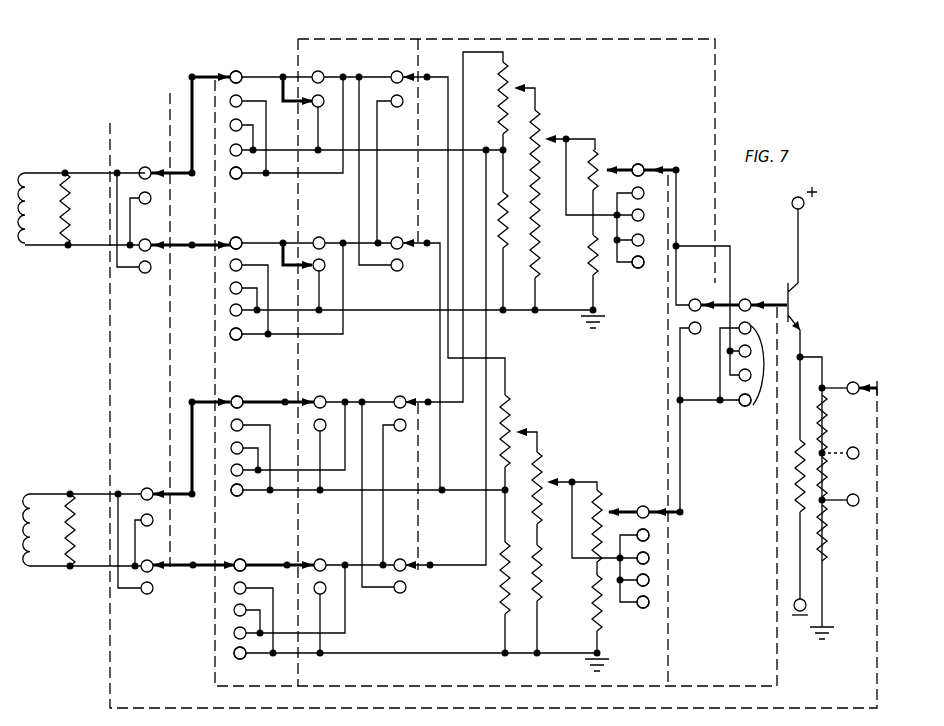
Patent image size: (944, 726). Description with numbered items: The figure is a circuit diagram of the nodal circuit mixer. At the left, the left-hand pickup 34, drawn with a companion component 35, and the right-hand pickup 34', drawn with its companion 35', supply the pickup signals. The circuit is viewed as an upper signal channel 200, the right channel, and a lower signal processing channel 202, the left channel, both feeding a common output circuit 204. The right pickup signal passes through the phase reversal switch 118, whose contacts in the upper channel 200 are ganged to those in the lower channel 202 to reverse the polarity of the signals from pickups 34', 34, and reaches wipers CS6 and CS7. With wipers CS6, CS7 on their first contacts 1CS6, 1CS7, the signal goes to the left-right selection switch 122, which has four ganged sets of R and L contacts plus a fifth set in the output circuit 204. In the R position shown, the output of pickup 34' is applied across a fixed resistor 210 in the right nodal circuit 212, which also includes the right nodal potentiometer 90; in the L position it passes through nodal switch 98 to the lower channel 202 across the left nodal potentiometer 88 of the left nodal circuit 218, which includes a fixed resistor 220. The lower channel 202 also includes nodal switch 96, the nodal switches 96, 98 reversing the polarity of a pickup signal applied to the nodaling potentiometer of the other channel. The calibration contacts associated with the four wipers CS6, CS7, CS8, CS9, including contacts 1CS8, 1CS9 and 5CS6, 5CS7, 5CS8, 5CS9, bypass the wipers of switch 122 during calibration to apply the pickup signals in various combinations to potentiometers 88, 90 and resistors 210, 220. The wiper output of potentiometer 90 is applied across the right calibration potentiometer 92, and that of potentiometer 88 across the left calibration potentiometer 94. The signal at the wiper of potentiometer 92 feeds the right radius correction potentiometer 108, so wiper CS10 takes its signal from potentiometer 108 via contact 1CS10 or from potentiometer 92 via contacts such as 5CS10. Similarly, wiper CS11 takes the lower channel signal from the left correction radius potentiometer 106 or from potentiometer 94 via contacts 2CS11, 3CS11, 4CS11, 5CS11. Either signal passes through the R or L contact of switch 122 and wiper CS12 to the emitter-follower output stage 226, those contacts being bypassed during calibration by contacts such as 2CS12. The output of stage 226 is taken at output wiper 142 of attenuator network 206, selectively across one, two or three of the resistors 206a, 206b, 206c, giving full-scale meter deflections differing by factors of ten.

The left-hand pickup 34 is at (82, 549).
The load resistor 35 is at (54, 516).
The right-hand pickup 34' is at (76, 194).
The load resistor 35' is at (64, 189).
The phase reversal switch 118 is at (167, 80).
The left-right selection switch 122 is at (343, 68).
The wiper CS6 is at (204, 77).
The first contact 1CS6 is at (236, 70).
The switch contact 5CS6 is at (236, 180).
The wiper CS7 is at (222, 240).
The first contact 1CS7 is at (230, 250).
The switch contact 5CS7 is at (236, 340).
The wiper CS8 is at (220, 402).
The switch contact 1CS8 is at (244, 404).
The switch contact 5CS8 is at (237, 497).
The wiper CS9 is at (222, 565).
The switch contact 1CS9 is at (244, 564).
The switch contact 5CS9 is at (240, 661).
The nodal switch 98 is at (397, 71).
The left nodal switch 96 is at (415, 398).
The right nodal potentiometer 90 is at (510, 72).
The right calibration potentiometer 92 is at (540, 125).
The fixed resistor 210 is at (518, 204).
The right nodal circuit 212 is at (517, 318).
The upper signal channel 200 is at (635, 119).
The right radius correction potentiometer 108 is at (600, 155).
The wiper CS10 is at (652, 165).
The contact 1CS10 is at (646, 165).
The contact 5CS10 is at (641, 268).
The left nodal potentiometer 88 is at (521, 404).
The left calibration potentiometer 94 is at (547, 465).
The fixed resistor 220 is at (503, 575).
The left nodal circuit 218 is at (521, 660).
The lower signal processing channel 202 is at (625, 432).
The left correction radius potentiometer 106 is at (608, 488).
The wiper CS11 is at (646, 512).
The contact 2CS11 is at (649, 535).
The contact 3CS11 is at (649, 558).
The contact 4CS11 is at (649, 580).
The contact 5CS11 is at (649, 602).
The common output circuit 204 is at (778, 260).
The wiper CS12 is at (762, 303).
The contact 2CS12 is at (732, 415).
The emitter-follower output stage 226 is at (810, 320).
The output wiper 142 is at (874, 386).
The attenuator network 206 is at (838, 645).
The resistor 206a is at (823, 549).
The resistor 206b is at (825, 488).
The resistor 206c is at (825, 431).